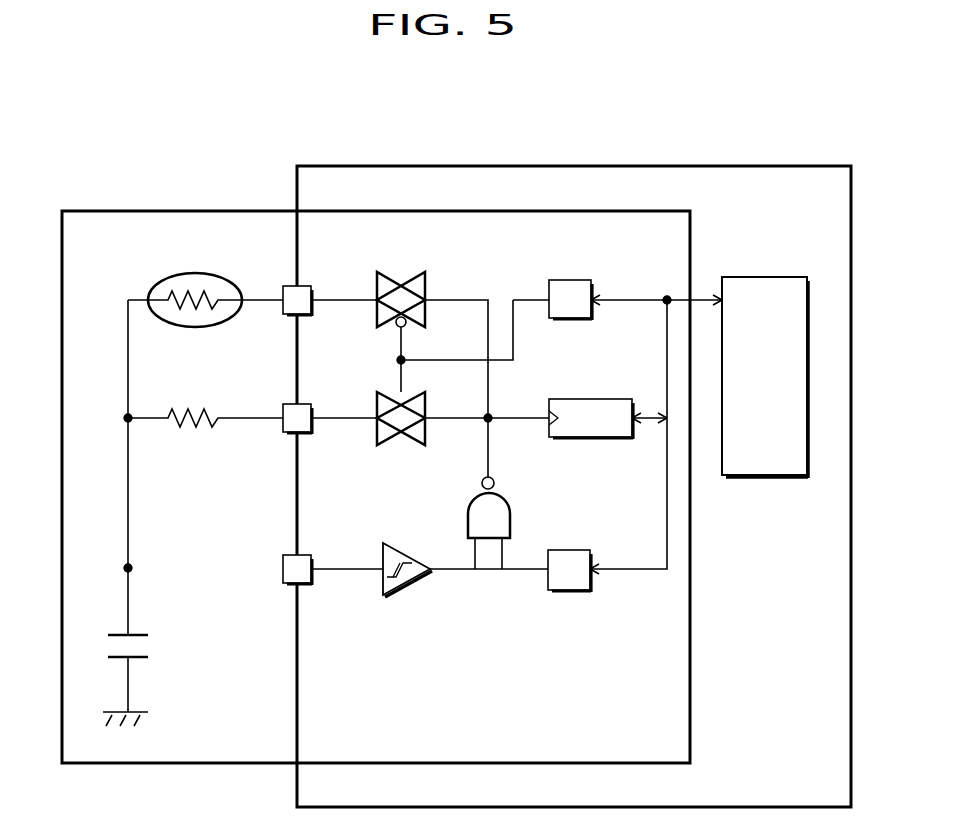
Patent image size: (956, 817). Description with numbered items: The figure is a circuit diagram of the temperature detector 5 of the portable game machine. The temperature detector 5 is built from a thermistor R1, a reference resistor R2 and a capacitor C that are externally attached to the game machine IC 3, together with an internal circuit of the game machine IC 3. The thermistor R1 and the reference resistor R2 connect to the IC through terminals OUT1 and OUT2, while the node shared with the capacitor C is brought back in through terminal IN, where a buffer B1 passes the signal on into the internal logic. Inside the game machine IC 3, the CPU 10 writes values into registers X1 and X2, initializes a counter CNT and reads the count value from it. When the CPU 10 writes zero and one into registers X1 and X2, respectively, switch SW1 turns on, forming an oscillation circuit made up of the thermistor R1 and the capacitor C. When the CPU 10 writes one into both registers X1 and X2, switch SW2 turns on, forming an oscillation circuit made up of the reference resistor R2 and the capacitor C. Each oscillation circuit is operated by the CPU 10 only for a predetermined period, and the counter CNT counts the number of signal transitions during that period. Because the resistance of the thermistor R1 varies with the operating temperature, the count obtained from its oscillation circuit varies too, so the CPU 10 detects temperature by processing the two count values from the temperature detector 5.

The temperature detector 5 is at (154, 211).
The game machine IC 3 is at (771, 166).
The CPU 10 is at (772, 277).
The thermistor R1 is at (205, 283).
The reference resistor R2 is at (205, 399).
The capacitor C is at (135, 680).
The output terminal OUT1 is at (319, 286).
The output terminal OUT2 is at (319, 403).
The input terminal IN is at (306, 554).
The switch SW1 is at (401, 284).
The switch SW2 is at (401, 434).
The register X1 is at (570, 282).
The register X2 is at (569, 554).
The counter CNT is at (591, 403).
The buffer B1 is at (407, 583).